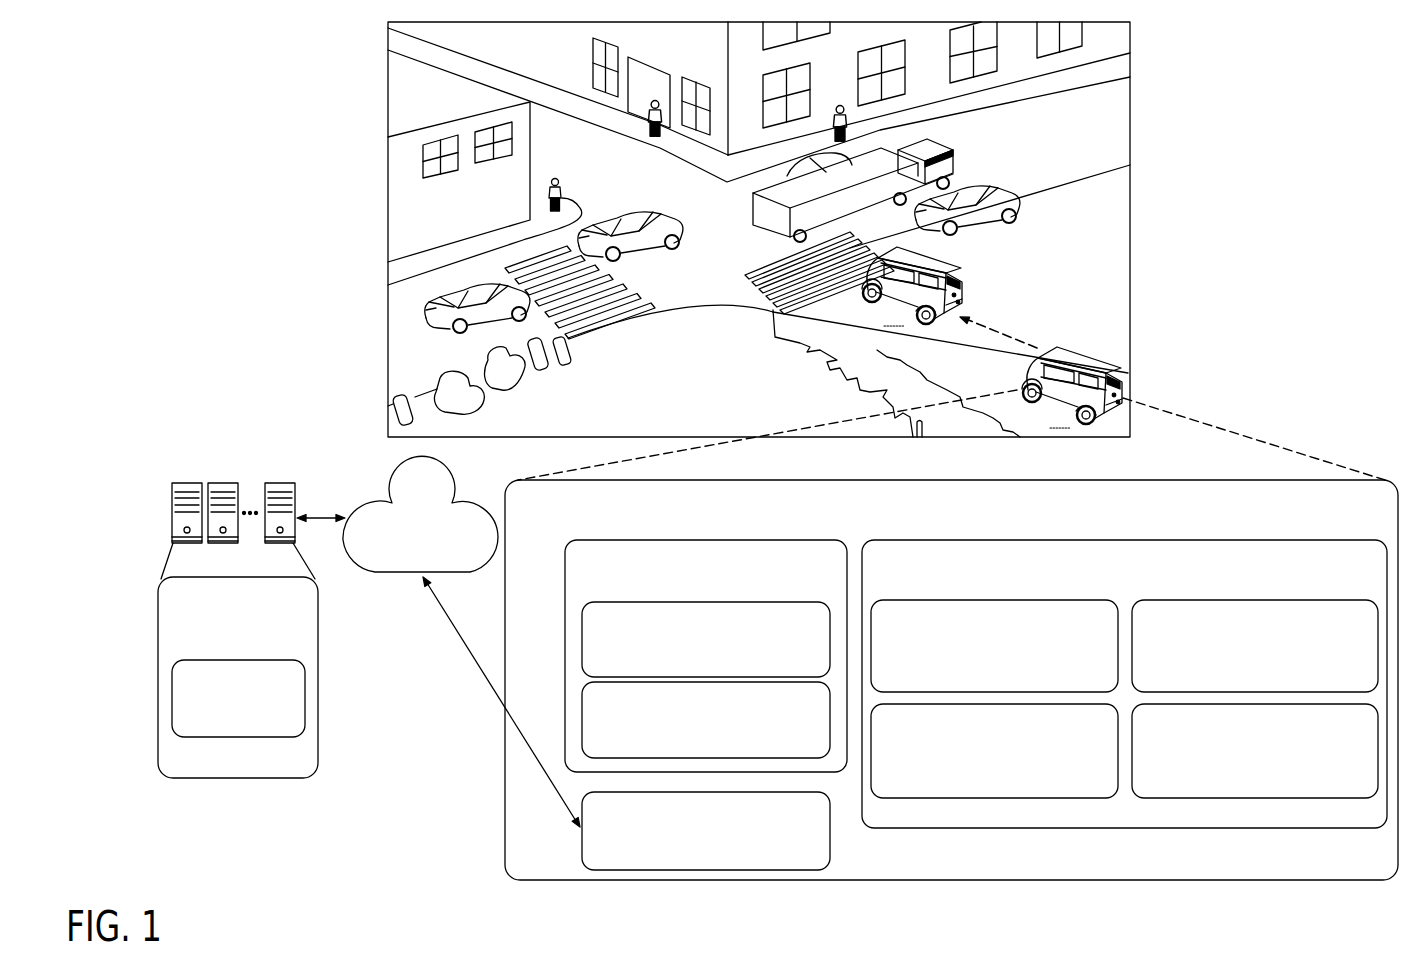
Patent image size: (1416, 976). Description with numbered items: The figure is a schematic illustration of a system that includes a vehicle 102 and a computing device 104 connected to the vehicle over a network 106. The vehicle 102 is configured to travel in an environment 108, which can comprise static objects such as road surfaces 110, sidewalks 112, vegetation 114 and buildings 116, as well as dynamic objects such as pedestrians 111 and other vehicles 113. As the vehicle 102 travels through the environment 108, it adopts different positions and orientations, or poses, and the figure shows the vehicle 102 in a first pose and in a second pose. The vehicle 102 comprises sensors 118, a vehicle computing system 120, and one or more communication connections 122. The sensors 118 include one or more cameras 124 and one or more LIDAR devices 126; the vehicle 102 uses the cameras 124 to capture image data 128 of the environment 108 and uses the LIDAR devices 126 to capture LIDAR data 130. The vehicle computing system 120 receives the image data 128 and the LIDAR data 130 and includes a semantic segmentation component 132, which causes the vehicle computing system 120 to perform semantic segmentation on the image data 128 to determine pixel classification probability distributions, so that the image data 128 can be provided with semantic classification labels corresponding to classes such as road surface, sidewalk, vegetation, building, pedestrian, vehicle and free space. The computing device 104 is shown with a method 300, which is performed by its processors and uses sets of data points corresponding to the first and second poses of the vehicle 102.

The vehicle 102 is at (955, 288).
The computing device 104 is at (302, 627).
The network 106 is at (438, 549).
The environment 108 is at (1130, 100).
The road surfaces 110 is at (1115, 170).
The pedestrians 111 is at (650, 130).
The sidewalks 112 is at (705, 161).
The vehicles 113 is at (952, 157).
The vegetation 114 is at (830, 362).
The buildings 116 is at (512, 173).
The sensors 118 is at (765, 577).
The vehicle computing system 120 is at (1276, 575).
The communication connection(s) 122 is at (793, 851).
The cameras 124 is at (772, 652).
The LIDAR devices 126 is at (795, 734).
The image data 128 is at (1066, 655).
The LIDAR data 130 is at (1327, 655).
The semantic segmentation component 132 is at (1070, 780).
The method 300 is at (257, 703).